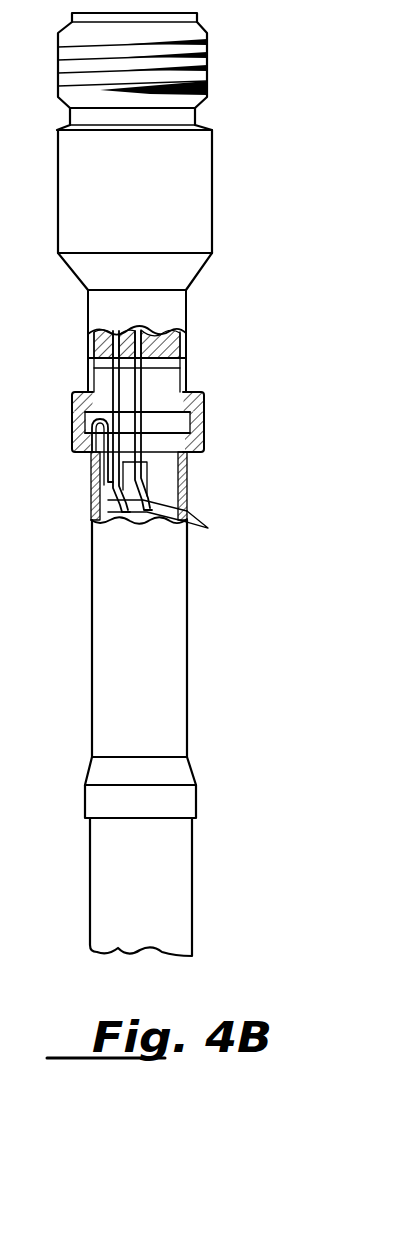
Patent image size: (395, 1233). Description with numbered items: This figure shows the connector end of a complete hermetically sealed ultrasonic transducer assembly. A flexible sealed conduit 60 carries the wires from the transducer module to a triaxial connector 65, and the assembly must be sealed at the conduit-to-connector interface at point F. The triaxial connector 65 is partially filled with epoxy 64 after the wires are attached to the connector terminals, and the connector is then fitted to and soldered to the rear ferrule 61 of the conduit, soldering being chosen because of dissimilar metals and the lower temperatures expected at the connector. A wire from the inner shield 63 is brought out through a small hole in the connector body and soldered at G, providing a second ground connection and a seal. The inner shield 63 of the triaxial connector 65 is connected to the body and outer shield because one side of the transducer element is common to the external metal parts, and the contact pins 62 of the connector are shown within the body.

The flexible sealed conduit 60 is at (112, 872).
The rear ferrule 61 is at (170, 700).
The contact pins 62 is at (187, 503).
The inner shield 63 is at (86, 374).
The epoxy 64 is at (183, 348).
The triaxial connector 65 is at (190, 200).
The conduit-to-connector interface F is at (188, 501).
The solder point for inner shield wire G is at (91, 452).